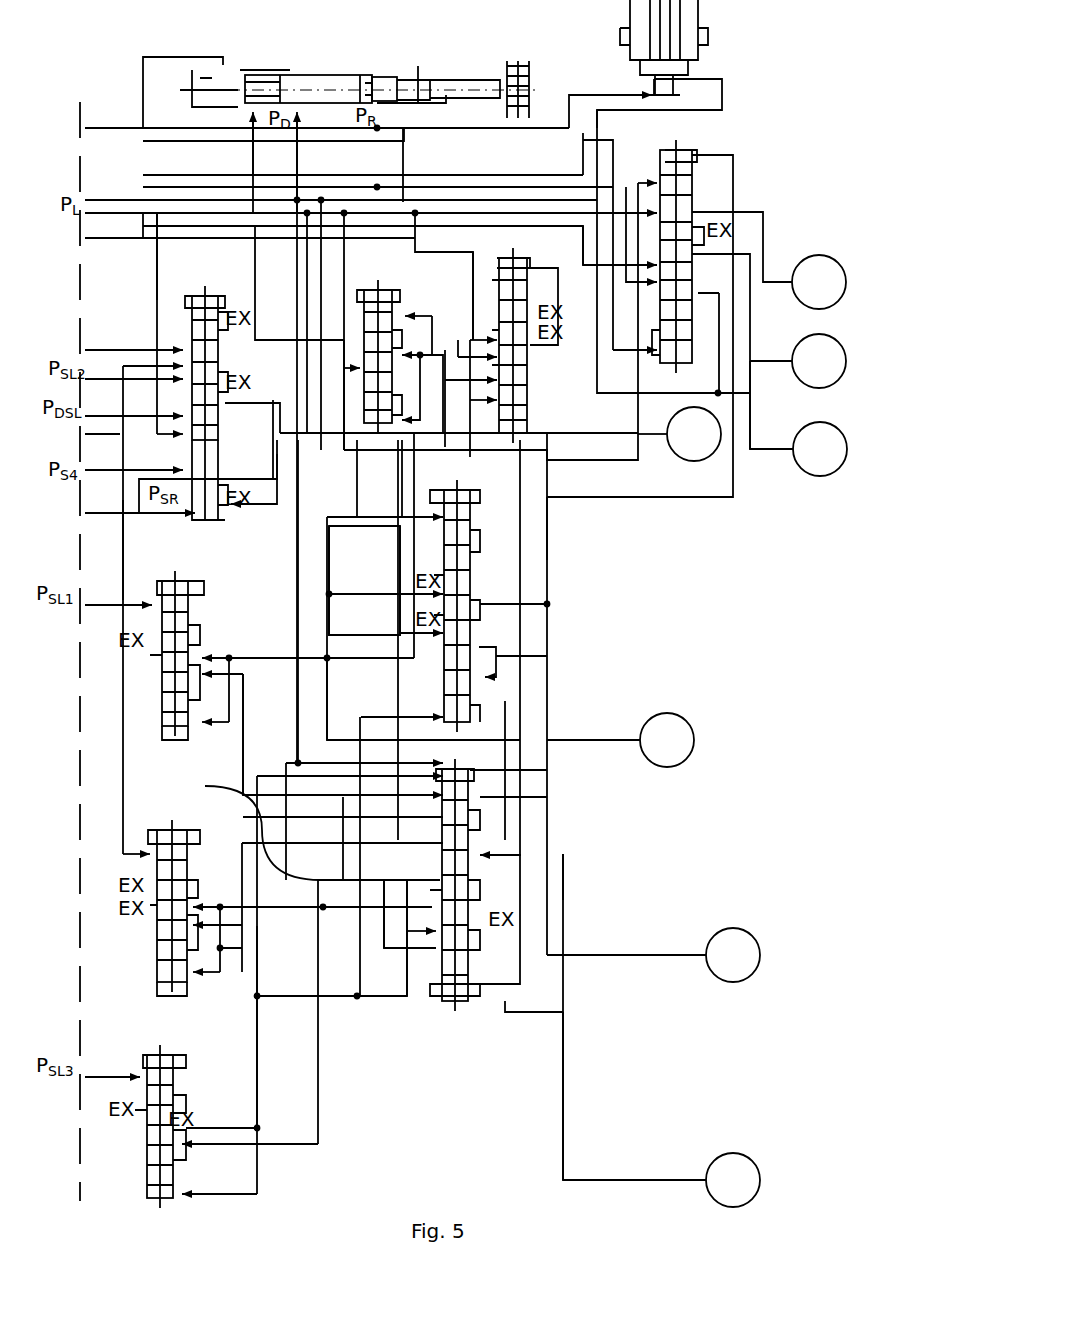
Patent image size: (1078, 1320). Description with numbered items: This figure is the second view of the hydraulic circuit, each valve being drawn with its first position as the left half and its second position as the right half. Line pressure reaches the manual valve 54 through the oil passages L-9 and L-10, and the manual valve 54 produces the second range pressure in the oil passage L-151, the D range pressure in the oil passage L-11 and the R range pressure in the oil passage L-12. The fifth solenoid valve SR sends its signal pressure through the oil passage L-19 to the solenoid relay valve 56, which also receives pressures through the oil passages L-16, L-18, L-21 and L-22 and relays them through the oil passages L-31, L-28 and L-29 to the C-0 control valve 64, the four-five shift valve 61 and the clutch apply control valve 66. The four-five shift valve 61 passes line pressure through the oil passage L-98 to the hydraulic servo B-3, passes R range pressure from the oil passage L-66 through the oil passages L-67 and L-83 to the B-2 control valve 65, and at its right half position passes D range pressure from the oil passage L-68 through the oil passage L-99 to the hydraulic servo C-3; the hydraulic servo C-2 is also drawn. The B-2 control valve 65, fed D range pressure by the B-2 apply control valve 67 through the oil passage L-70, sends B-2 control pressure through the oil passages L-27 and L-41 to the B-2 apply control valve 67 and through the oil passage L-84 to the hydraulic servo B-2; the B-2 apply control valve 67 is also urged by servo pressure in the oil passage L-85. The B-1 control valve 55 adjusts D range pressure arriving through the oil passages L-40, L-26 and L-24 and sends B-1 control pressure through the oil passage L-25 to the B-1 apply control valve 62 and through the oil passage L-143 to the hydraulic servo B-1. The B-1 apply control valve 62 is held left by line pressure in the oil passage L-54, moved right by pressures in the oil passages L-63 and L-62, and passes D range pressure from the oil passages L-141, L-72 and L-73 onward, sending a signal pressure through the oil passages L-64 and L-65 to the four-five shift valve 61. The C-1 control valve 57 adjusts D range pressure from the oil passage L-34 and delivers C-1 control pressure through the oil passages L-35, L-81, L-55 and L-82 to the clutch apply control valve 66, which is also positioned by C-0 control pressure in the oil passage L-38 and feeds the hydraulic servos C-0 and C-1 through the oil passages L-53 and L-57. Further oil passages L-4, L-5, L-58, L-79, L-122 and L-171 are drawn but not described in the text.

The oil passage L-151 is at (168, 57).
The manual valve 54 is at (340, 75).
The oil passage L-12 is at (418, 80).
The fifth solenoid valve SR is at (712, 10).
The oil passage L-19 is at (722, 95).
The oil passage L-5 is at (583, 140).
The 4–5 shift valve 61 is at (690, 150).
The oil passage L-9 is at (110, 200).
The oil passage L-11 is at (250, 160).
The oil passage L-10 is at (300, 160).
The oil passage L-66 is at (447, 187).
The oil passage L-122 is at (158, 230).
The oil passage L-4 is at (100, 245).
The oil passage L-83 is at (255, 257).
The oil passage L-70 is at (298, 357).
The oil passage L-141 is at (346, 257).
The oil passage L-35 is at (447, 260).
The oil passage L-68 is at (520, 215).
The solenoid relay valve 56 is at (200, 296).
The B-2 control valve 65 is at (395, 295).
The B-2 apply control valve 67 is at (532, 288).
The oil passage L-22 is at (96, 343).
The oil passage L-16 is at (85, 350).
The oil passage L-31 is at (273, 400).
The oil passage L-29 is at (276, 395).
The oil passage L-21 is at (100, 430).
The oil passage L-18 is at (105, 480).
The oil passage L-28 is at (252, 506).
The oil passage L-98 is at (763, 228).
The hydraulic servo B-3 is at (819, 282).
The oil passage L-67 is at (713, 290).
The hydraulic servo C-3 is at (798, 361).
The oil passage L-99 is at (750, 380).
The hydraulic servo C-2 is at (820, 449).
The oil passage L-84 is at (552, 433).
The hydraulic servo B-2 is at (679, 434).
The oil passage L-41 is at (530, 442).
The oil passage L-65 is at (700, 497).
The B-1 apply control valve 62 is at (468, 492).
The oil passage L-40 is at (298, 553).
The oil passage L-54 is at (358, 560).
The oil passage L-73 is at (332, 594).
The oil passage L-72 is at (400, 633).
The oil passage L-85 is at (547, 537).
The B-1 control valve 55 is at (192, 585).
The oil passage L-64 is at (550, 588).
The oil passage L-25 is at (289, 658).
The oil passage L-171 is at (547, 658).
The oil passage L-62 is at (368, 740).
The oil passage L-143 is at (608, 740).
The oil passage L-24 is at (243, 738).
The hydraulic servo B-1 is at (667, 740).
The oil passage L-38 is at (547, 772).
The oil passage L-58 is at (300, 826).
The oil passage L-63 is at (540, 795).
The C-0 control valve 64 is at (182, 830).
The clutch apply control valve 66 is at (480, 836).
The oil passage L-53 is at (563, 912).
The hydraulic servo C-0 is at (733, 955).
The oil passage L-27 is at (257, 930).
The oil passage L-55 is at (270, 996).
The oil passage L-82 is at (397, 996).
The oil passage L-26 is at (421, 957).
The oil passage L-79 is at (563, 1013).
The C-1 control valve 57 is at (153, 1055).
The oil passage L-57 is at (563, 1080).
The oil passage L-34 is at (285, 1144).
The hydraulic servo C-1 is at (733, 1180).
The oil passage L-81 is at (222, 1194).